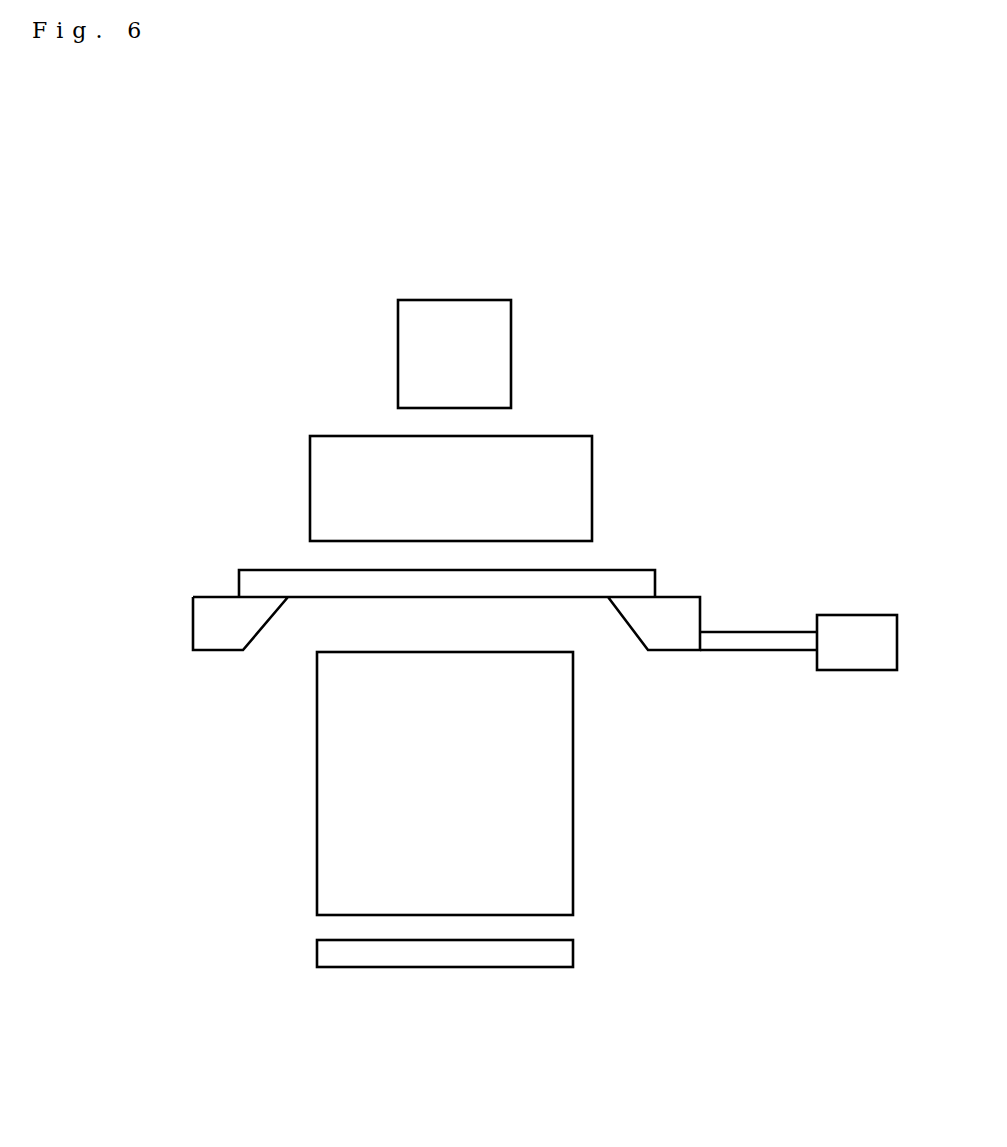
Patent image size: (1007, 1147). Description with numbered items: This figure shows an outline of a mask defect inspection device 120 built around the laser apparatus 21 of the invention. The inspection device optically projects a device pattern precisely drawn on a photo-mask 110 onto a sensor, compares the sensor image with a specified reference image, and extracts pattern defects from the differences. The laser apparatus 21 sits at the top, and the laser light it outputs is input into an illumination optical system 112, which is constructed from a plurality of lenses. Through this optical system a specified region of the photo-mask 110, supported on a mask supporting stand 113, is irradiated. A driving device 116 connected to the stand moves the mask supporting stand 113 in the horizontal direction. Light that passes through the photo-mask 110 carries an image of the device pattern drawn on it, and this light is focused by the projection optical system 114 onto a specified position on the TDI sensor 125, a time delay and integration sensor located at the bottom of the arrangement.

The mask defect inspection device 120 is at (727, 357).
The laser apparatus 21 is at (500, 352).
The illumination optical system 112 is at (583, 497).
The photo-mask 110 is at (652, 583).
The mask supporting stand 113 is at (690, 607).
The driving device 116 is at (860, 617).
The projection optical system 114 is at (565, 745).
The TDI sensor 125 is at (567, 950).